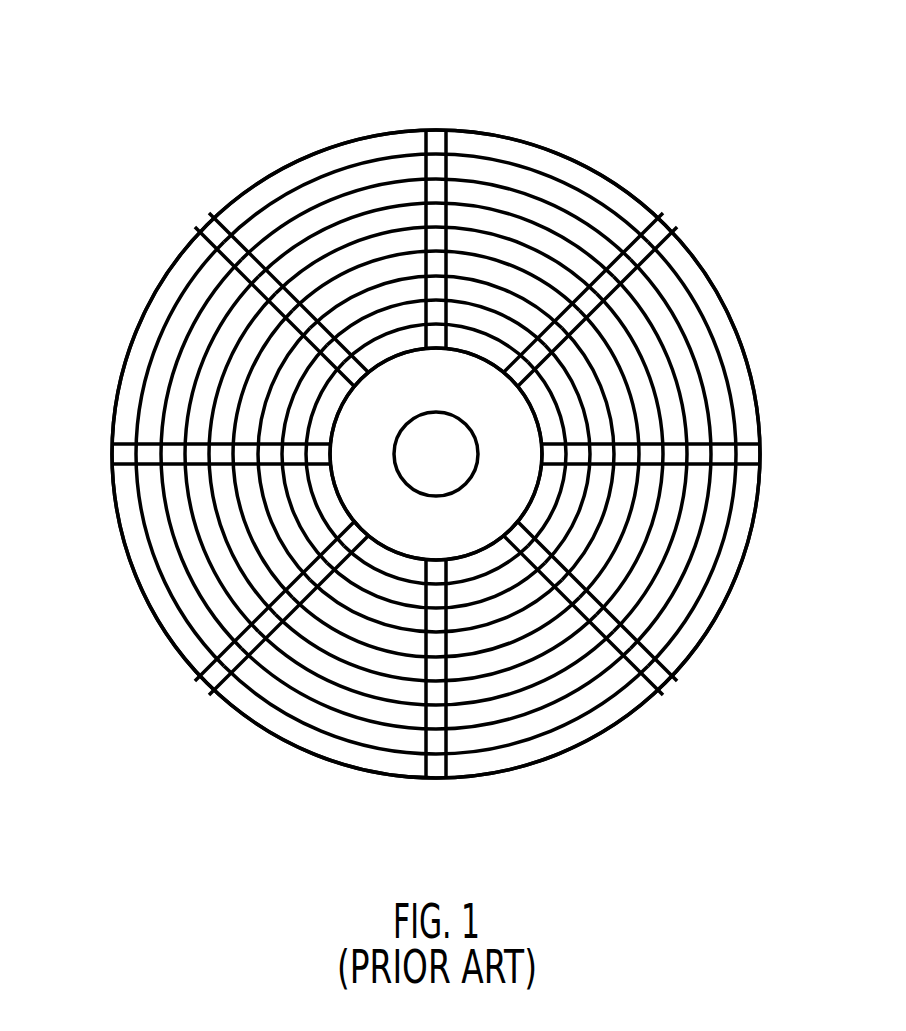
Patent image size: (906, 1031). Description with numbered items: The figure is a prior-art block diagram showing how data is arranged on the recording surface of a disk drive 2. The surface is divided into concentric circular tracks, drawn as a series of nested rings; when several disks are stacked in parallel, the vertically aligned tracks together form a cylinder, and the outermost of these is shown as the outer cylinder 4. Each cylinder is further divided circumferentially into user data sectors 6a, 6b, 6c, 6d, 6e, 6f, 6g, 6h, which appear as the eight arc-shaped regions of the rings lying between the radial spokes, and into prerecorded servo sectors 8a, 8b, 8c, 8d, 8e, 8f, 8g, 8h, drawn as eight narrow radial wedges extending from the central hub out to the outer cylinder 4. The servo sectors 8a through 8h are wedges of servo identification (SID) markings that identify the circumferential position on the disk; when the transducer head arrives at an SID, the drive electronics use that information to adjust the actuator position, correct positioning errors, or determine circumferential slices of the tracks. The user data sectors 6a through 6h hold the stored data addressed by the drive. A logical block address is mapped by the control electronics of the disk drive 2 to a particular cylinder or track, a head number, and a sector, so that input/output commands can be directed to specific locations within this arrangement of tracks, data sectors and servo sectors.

The disk drive 2 is at (226, 103).
The outer cylinder 4 is at (498, 145).
The user data sector 6a is at (593, 183).
The user data sector 6b is at (728, 331).
The user data sector 6c is at (735, 567).
The user data sector 6d is at (573, 740).
The user data sector 6e is at (300, 745).
The user data sector 6f is at (135, 568).
The user data sector 6g is at (143, 331).
The user data sector 6h is at (315, 158).
The prerecorded servo sector 8a is at (436, 140).
The prerecorded servo sector 8b is at (660, 230).
The prerecorded servo sector 8c is at (754, 454).
The prerecorded servo sector 8d is at (660, 678).
The prerecorded servo sector 8e is at (436, 775).
The prerecorded servo sector 8f is at (210, 678).
The prerecorded servo sector 8g is at (118, 453).
The prerecorded servo sector 8h is at (208, 232).